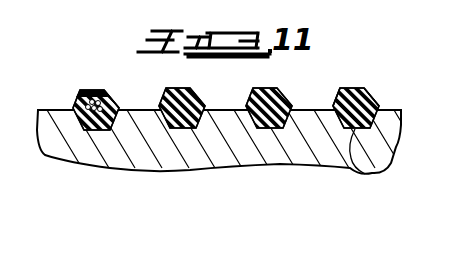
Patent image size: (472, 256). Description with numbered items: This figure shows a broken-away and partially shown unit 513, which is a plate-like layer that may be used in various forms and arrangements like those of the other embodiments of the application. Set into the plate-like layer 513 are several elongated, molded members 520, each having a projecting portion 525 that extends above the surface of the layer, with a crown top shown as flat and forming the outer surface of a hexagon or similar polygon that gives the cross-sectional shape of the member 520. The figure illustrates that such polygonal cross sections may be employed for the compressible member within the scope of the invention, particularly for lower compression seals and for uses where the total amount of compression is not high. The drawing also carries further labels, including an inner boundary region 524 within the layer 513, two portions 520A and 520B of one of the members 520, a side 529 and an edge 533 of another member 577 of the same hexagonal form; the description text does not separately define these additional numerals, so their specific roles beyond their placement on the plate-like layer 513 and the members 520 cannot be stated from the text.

The unit 513 is at (404, 117).
The layer boundary 524 is at (388, 166).
The member 520 is at (307, 66).
The embedded element body 520A is at (75, 106).
The embedded element top portion 520B is at (84, 96).
The projecting portion 525 is at (135, 82).
The element side 529 is at (336, 99).
The embedded element 577 is at (350, 88).
The element edge 533 is at (372, 100).